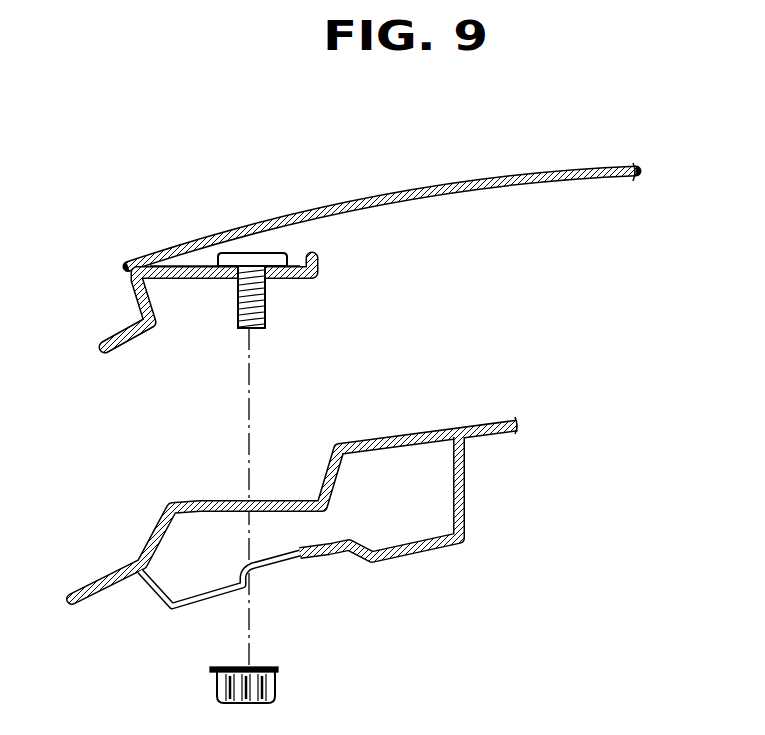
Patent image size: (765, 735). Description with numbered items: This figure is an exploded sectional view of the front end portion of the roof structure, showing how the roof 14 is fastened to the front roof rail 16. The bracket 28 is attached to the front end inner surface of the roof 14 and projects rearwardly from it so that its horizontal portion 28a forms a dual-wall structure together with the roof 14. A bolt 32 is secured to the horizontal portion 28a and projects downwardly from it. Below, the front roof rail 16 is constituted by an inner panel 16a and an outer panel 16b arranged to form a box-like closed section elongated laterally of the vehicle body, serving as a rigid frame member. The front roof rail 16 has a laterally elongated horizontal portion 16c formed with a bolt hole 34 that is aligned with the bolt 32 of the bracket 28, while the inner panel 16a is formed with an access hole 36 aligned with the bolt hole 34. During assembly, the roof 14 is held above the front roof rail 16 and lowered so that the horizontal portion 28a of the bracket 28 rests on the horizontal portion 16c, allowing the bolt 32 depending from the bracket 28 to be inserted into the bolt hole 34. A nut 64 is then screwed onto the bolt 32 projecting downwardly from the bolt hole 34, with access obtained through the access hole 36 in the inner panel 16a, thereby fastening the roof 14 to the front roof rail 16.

The roof 14 is at (500, 179).
The bracket 28 is at (192, 266).
The horizontal portion 28a is at (210, 266).
The bolt 32 is at (266, 306).
The front roof rail 16 is at (310, 502).
The inner panel 16a is at (420, 554).
The outer panel 16b is at (400, 441).
The horizontal portion 16c is at (203, 500).
The bolt hole 34 is at (262, 502).
The access hole 36 is at (303, 568).
The nut 64 is at (278, 686).